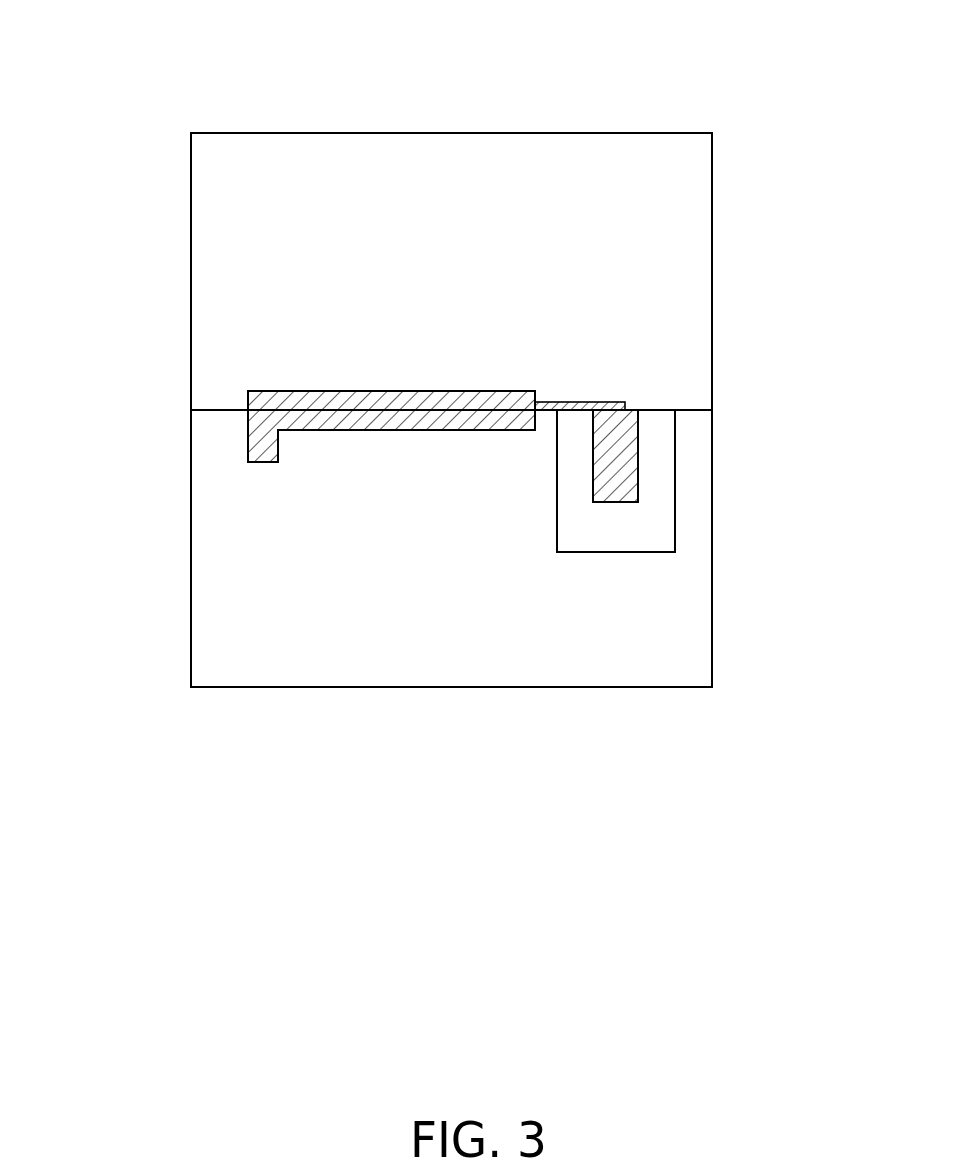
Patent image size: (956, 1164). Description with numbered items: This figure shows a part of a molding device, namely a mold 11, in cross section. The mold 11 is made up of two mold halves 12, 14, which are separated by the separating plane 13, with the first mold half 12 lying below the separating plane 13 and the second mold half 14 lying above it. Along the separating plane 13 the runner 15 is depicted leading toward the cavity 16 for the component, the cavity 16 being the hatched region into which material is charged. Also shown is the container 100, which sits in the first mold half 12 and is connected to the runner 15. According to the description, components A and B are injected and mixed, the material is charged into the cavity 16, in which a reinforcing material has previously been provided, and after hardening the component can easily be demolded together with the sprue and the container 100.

The mold 11 is at (710, 86).
The first mold half 12 is at (682, 647).
The separating plane 13 is at (692, 410).
The second mold half 14 is at (235, 192).
The runner 15 is at (577, 402).
The cavity 16 is at (415, 412).
The container 100 is at (637, 468).